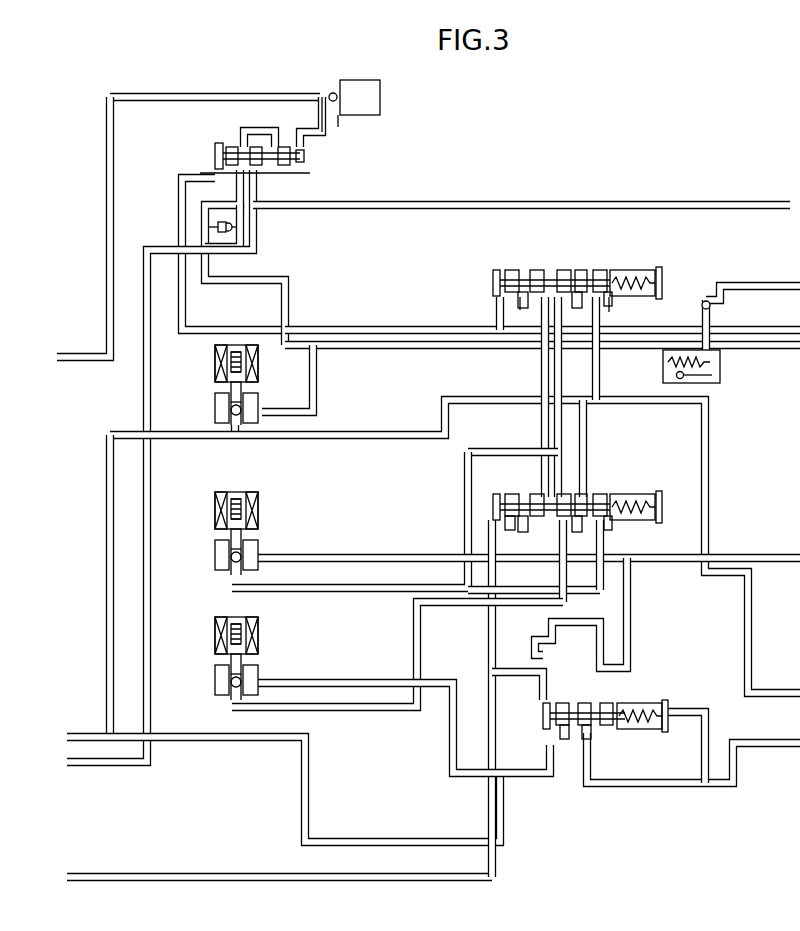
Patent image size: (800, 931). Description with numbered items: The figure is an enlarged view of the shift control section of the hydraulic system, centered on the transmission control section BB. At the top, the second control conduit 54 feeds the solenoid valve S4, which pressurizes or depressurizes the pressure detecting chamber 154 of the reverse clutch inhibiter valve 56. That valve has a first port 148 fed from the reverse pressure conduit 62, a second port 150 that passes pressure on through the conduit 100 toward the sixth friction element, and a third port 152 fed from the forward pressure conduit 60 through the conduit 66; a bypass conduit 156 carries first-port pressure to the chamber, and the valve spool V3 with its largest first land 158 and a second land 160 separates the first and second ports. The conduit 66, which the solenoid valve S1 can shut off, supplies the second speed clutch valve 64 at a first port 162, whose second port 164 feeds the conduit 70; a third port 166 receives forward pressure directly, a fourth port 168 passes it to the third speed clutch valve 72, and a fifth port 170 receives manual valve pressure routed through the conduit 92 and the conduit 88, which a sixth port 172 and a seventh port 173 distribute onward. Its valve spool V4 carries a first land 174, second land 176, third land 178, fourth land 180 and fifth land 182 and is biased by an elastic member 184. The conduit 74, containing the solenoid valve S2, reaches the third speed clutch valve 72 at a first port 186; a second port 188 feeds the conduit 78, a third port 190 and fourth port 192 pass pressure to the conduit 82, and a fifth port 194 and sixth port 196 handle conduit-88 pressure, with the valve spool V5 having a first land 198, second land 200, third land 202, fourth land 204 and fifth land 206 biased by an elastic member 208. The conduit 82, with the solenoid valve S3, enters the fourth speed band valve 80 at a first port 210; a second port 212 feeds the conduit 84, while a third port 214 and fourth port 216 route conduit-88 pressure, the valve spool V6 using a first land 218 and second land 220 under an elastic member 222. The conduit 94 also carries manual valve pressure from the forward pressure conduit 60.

The second control conduit 54 is at (107, 185).
The reverse clutch inhibiter valve 56 is at (342, 138).
The forward pressure conduit 60 is at (107, 658).
The reverse pressure conduit 62 is at (125, 764).
The second speed clutch valve 64 is at (572, 295).
The conduit 66 is at (316, 378).
The conduit 70 is at (690, 320).
The third speed clutch valve 72 is at (575, 507).
The conduit 74 is at (466, 513).
The conduit 78 is at (733, 552).
The fourth speed band valve 80 is at (606, 739).
The conduit 82 is at (415, 648).
The conduit 84 is at (690, 772).
The conduit 88 is at (488, 635).
The conduit 92 is at (228, 875).
The conduit 94 is at (393, 840).
The conduit 100 is at (288, 303).
The first port 148 is at (262, 170).
The second port 150 is at (240, 178).
The third port 152 is at (215, 168).
The pressure detecting chamber 154 is at (305, 165).
The bypass conduit 156 is at (250, 128).
The first land 158 is at (287, 145).
The second land 160 is at (232, 145).
The first port 162 is at (495, 290).
The second port 164 is at (497, 300).
The third port 166 is at (520, 300).
The fourth port 168 is at (545, 300).
The fifth port 170 is at (610, 305).
The sixth port 172 is at (615, 300).
The seventh port 173 is at (558, 300).
The first land 174 is at (497, 270).
The second land 176 is at (553, 272).
The third land 178 is at (606, 272).
The fourth land 180 is at (578, 272).
The fifth land 182 is at (528, 270).
The elastic member 184 is at (630, 282).
The first port 186 is at (497, 520).
The second port 188 is at (507, 532).
The third port 190 is at (546, 492).
The fourth port 192 is at (563, 530).
The fifth port 194 is at (612, 535).
The sixth port 196 is at (595, 497).
The first land 198 is at (500, 497).
The second land 200 is at (585, 495).
The third land 202 is at (603, 525).
The fourth land 204 is at (585, 494).
The fifth land 206 is at (525, 495).
The elastic member 208 is at (640, 500).
The first port 210 is at (548, 722).
The second port 212 is at (562, 732).
The third port 214 is at (600, 705).
The fourth port 216 is at (587, 732).
The first land 218 is at (545, 705).
The second land 220 is at (575, 710).
The elastic member 222 is at (620, 727).
The solenoid valve S1 is at (215, 363).
The solenoid valve S2 is at (215, 518).
The solenoid valve S3 is at (215, 637).
The solenoid valve S4 is at (354, 103).
The valve spool V3 is at (287, 132).
The valve spool V4 is at (545, 295).
The valve spool V5 is at (547, 507).
The valve spool V6 is at (579, 746).
The transmission control section BB is at (530, 160).